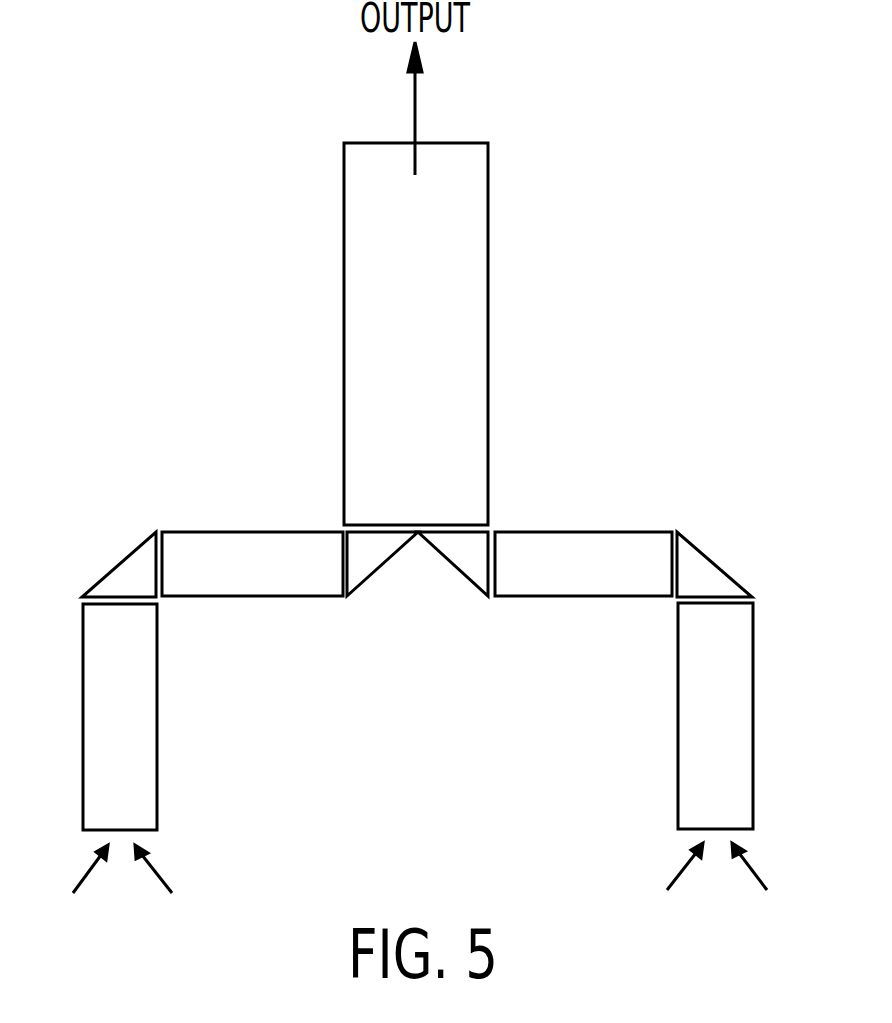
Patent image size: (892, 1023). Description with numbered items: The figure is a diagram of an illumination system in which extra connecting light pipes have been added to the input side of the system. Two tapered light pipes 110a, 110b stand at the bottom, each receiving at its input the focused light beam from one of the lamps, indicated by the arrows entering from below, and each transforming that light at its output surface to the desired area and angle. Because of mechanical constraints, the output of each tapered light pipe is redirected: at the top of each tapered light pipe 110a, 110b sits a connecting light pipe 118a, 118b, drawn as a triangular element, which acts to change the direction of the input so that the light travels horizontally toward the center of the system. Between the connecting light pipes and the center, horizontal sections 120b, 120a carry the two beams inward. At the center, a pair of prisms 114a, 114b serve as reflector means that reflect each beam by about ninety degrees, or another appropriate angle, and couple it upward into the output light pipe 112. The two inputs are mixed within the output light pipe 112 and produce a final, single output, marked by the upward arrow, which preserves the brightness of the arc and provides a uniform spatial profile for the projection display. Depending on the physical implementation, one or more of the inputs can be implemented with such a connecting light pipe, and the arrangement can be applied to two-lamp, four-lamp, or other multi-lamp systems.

The output light pipe 112 is at (488, 221).
The second waveguide section 120b is at (247, 531).
The first waveguide section 120a is at (617, 531).
The prism 114a is at (363, 582).
The prism 114b is at (478, 587).
The connecting light pipe 118a is at (123, 561).
The connecting light pipe 118b is at (714, 563).
The tapered light pipe 110a is at (157, 712).
The tapered light pipe 110b is at (753, 710).